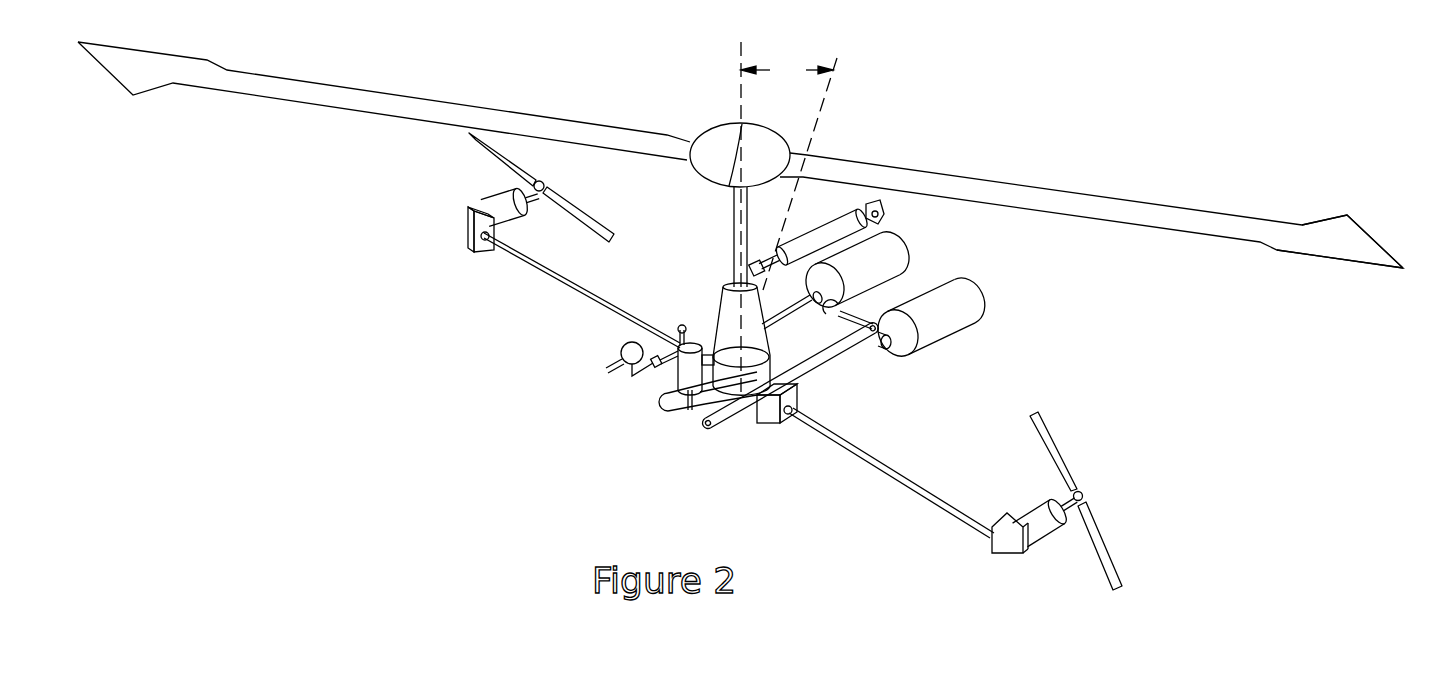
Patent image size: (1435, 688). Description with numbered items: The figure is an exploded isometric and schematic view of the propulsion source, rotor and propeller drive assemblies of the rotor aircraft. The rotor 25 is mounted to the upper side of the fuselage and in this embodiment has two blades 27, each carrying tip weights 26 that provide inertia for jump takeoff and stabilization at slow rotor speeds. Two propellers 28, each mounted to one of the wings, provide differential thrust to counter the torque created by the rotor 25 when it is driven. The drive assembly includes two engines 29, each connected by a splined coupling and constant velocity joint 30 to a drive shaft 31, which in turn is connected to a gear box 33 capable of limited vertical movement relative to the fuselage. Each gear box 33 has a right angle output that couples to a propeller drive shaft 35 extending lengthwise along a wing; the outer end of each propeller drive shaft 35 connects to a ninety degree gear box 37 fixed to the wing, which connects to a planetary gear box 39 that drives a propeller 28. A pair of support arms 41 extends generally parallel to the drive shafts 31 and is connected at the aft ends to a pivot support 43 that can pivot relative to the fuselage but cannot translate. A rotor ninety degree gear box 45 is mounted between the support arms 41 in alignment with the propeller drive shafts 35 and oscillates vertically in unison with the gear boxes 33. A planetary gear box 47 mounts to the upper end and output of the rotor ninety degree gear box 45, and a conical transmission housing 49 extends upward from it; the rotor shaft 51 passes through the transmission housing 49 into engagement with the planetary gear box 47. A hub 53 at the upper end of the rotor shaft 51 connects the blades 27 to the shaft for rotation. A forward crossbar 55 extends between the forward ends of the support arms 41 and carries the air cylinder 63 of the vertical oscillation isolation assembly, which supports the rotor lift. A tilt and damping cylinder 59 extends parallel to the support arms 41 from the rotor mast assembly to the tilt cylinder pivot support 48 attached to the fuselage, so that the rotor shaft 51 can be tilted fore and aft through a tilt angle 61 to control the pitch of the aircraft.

The rotor 25 is at (844, 93).
The tip weights 26 is at (1340, 222).
The blades 27 is at (1039, 185).
The propellers 28 is at (1067, 462).
The engines 29 is at (980, 315).
The splined coupling and constant velocity joint 30 is at (900, 340).
The drive shaft 31 is at (850, 365).
The gear box 33 is at (782, 427).
The propeller drive shaft 35 is at (910, 488).
The 90 degree gear box 37 is at (988, 540).
The planetary gear box 39 is at (1028, 507).
The support arms 41 is at (738, 410).
The pivot support 43 is at (895, 307).
The rotor 90 degree gear box 45 is at (713, 427).
The planetary gear box 47 is at (720, 363).
The tilt cylinder pivot support 48 is at (878, 212).
The conical transmission housing 49 is at (725, 320).
The rotor shaft 51 is at (733, 233).
The hub 53 is at (723, 137).
The forward crossbar 55 is at (690, 415).
The tilt and damping cylinder 59 is at (830, 218).
The tilt angle 61 is at (787, 70).
The air cylinder 63 is at (678, 382).